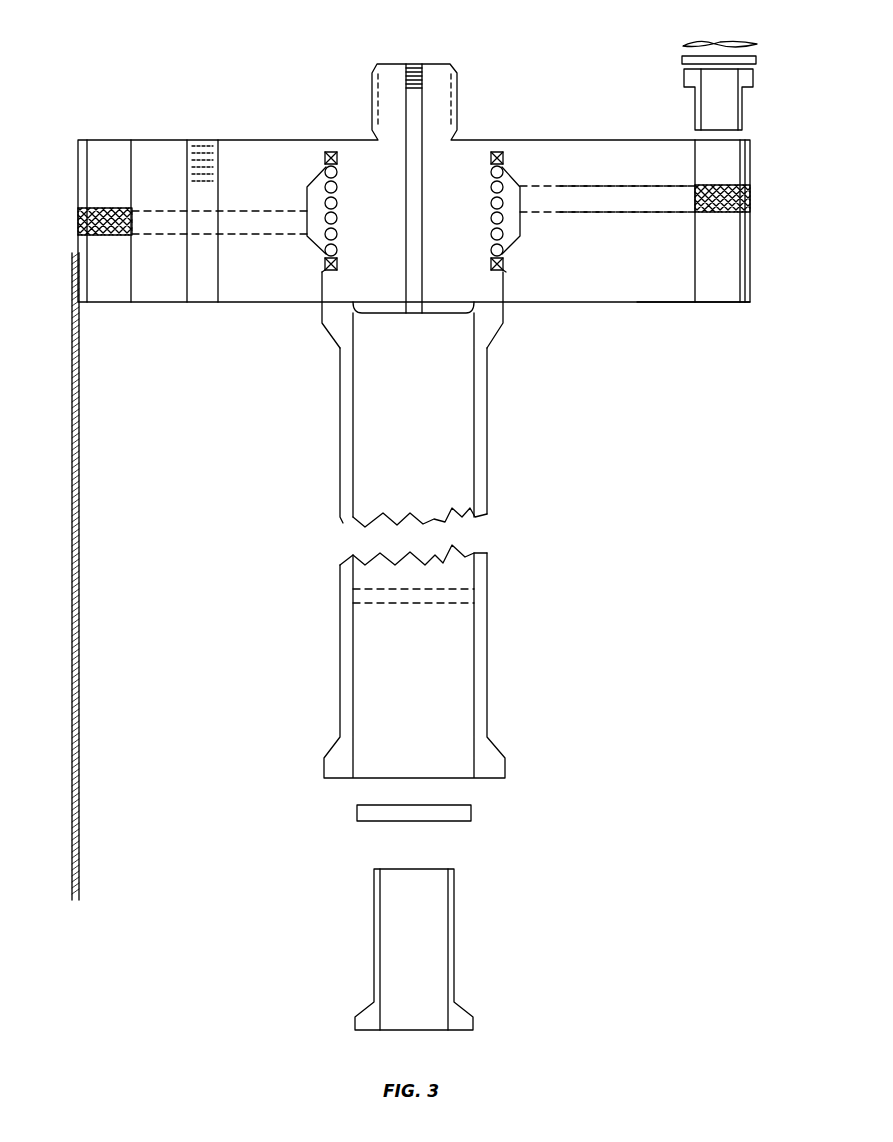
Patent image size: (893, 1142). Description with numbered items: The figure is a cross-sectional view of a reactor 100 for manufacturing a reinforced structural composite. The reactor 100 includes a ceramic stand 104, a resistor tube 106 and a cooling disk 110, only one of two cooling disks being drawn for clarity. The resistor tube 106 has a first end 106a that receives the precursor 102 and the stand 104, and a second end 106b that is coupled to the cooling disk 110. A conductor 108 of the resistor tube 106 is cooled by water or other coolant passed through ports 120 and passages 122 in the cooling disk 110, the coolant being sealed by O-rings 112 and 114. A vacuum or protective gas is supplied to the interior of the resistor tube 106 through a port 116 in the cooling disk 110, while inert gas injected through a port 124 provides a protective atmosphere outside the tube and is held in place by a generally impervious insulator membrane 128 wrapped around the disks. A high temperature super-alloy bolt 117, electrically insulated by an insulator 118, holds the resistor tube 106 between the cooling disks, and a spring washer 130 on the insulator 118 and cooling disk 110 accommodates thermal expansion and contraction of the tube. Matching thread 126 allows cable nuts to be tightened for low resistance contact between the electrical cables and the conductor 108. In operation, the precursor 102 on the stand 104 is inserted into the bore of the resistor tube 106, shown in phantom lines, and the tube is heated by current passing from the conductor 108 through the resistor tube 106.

The reactor 100 is at (140, 60).
The precursor 102 is at (354, 596).
The ceramic stand 104 is at (373, 912).
The resistor tube 106 is at (340, 393).
The first end 106a is at (323, 786).
The second end 106b is at (295, 312).
The conductor 108 is at (362, 148).
The cooling disk 110 is at (634, 287).
The O-ring 112 is at (506, 270).
The O-ring 114 is at (503, 157).
The port 116 is at (412, 62).
The high temperature super-alloy bolt 117 is at (748, 108).
The insulator 118 is at (757, 80).
The port 120 is at (755, 205).
The passage 122 is at (650, 187).
The port 124 is at (201, 135).
The matching thread 126 is at (457, 96).
The insulator membrane 128 is at (72, 560).
The spring washer 130 is at (683, 45).